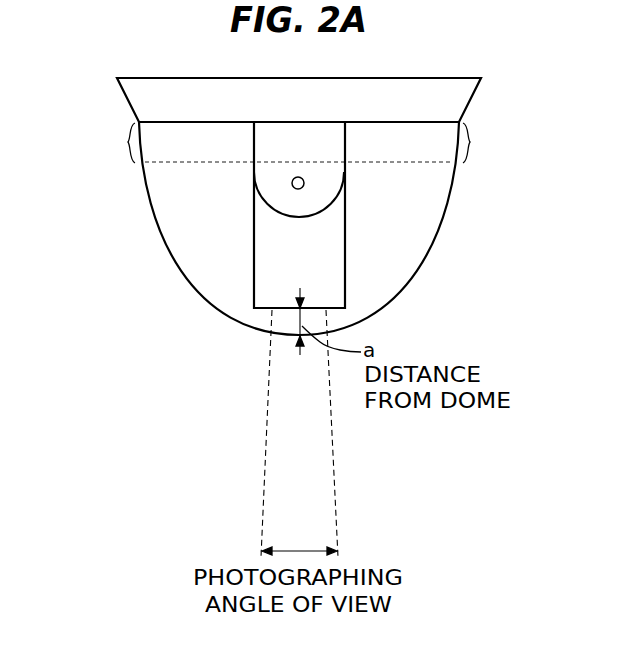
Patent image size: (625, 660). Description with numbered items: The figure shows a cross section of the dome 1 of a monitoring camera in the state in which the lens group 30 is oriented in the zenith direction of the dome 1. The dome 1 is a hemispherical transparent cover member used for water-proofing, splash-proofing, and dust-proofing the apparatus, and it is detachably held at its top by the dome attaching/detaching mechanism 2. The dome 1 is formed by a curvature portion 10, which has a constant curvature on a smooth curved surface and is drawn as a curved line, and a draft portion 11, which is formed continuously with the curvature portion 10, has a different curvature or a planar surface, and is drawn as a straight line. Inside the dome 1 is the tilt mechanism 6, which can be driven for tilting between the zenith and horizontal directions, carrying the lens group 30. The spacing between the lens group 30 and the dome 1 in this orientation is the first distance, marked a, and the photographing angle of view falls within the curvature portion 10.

The dome 1 is at (289, 213).
The dome attaching/detaching mechanism 2 is at (126, 99).
The tilt mechanism 6 is at (337, 196).
The curvature portion 10 is at (421, 272).
The draft portion 11 is at (301, 143).
The lens group 30 is at (345, 299).